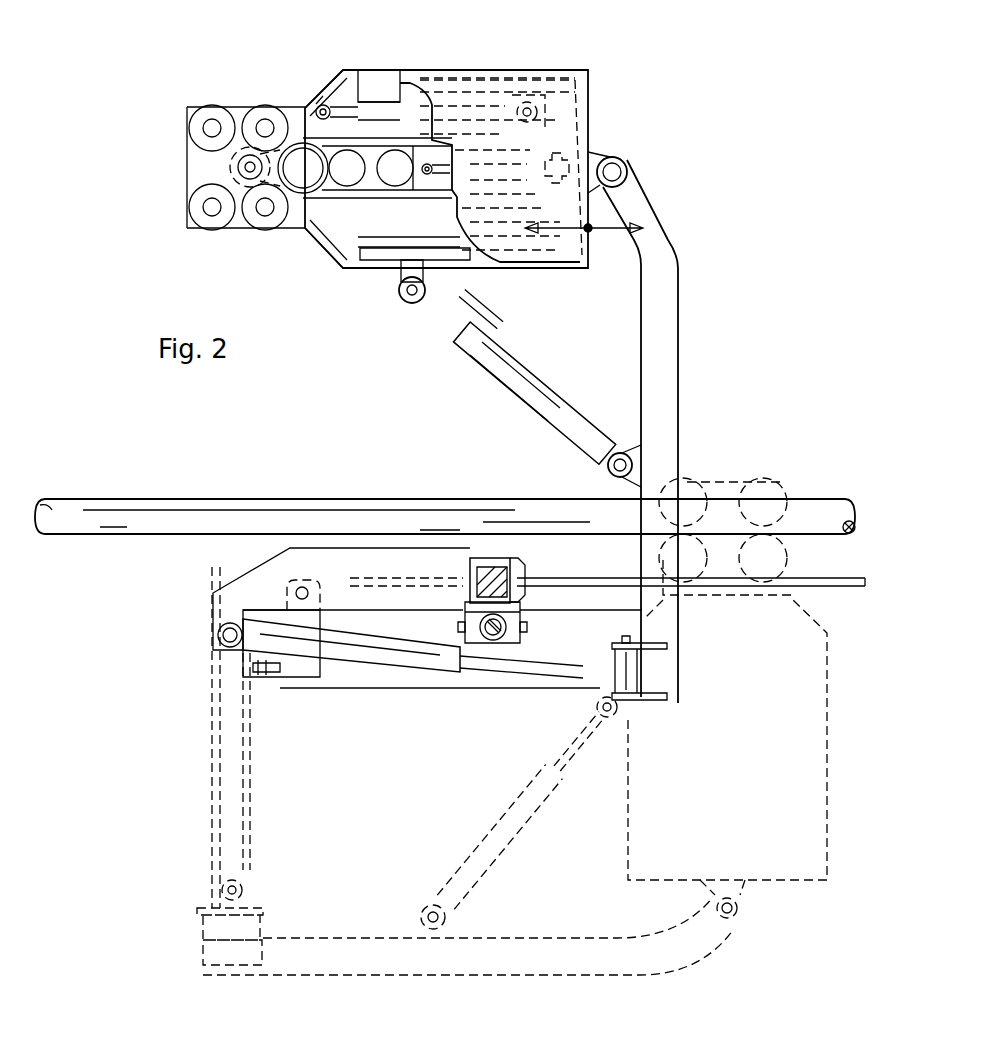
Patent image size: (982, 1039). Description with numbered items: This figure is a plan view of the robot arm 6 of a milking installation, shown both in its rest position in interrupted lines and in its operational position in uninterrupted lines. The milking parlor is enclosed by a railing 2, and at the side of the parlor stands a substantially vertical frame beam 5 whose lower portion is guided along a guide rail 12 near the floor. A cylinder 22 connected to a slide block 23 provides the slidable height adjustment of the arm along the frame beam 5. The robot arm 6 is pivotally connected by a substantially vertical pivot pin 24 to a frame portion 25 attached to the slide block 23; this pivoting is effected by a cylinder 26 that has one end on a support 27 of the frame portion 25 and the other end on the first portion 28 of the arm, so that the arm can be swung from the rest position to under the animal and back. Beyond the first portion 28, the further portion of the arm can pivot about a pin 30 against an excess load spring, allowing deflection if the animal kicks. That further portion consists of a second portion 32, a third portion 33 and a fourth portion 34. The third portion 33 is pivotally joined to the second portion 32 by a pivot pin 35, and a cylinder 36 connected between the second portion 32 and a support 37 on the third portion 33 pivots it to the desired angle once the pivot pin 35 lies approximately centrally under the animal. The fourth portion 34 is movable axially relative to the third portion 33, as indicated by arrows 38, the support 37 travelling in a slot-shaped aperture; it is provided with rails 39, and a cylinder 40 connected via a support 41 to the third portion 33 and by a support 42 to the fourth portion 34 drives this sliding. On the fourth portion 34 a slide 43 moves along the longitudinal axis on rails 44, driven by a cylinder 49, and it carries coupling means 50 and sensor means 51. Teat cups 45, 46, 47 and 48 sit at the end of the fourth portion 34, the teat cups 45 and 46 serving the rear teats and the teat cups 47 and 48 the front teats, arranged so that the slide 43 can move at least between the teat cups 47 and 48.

The railing 2 is at (115, 495).
The vertical frame beam 5 is at (487, 558).
The robot arm 6 is at (716, 335).
The guide rail 12 is at (532, 586).
The cylinder 22 is at (492, 640).
The slide block 23 is at (513, 566).
The pivot pin 24 is at (302, 587).
The frame portion 25 is at (355, 548).
The cylinder 26 is at (392, 680).
The support 27 is at (222, 629).
The first portion 28 is at (245, 733).
The pin 30 is at (628, 640).
The second portion 32 is at (678, 410).
The third portion 33 is at (582, 108).
The fourth portion 34 is at (588, 72).
The pivot pin 35 is at (625, 165).
The cylinder 36 is at (520, 393).
The support 37 is at (400, 292).
The arrows 38 is at (590, 232).
The rails 39 is at (386, 74).
The cylinder 40 is at (323, 104).
The support 41 is at (525, 100).
The support 42 is at (320, 92).
The slide 43 is at (358, 186).
The rails 44 is at (404, 188).
The teat cup 45 is at (188, 211).
The teat cup 46 is at (188, 129).
The teat cup 47 is at (262, 232).
The teat cup 48 is at (258, 106).
The cylinder 49 is at (524, 158).
The coupling means 50 is at (236, 172).
The sensor means 51 is at (303, 198).